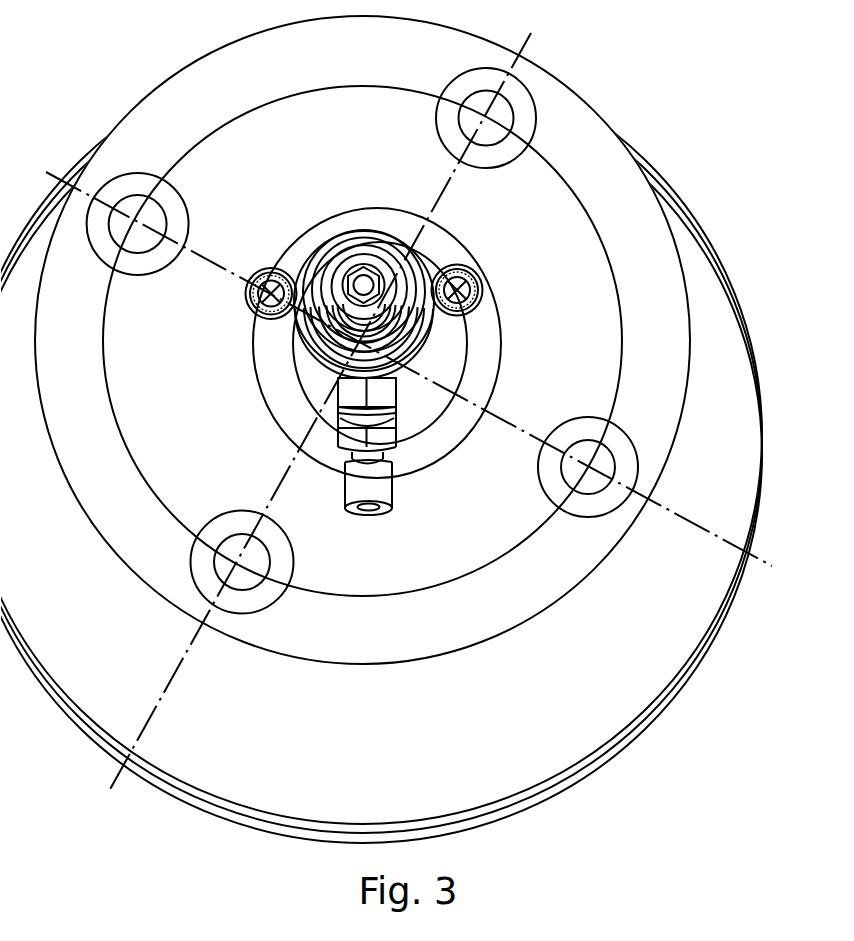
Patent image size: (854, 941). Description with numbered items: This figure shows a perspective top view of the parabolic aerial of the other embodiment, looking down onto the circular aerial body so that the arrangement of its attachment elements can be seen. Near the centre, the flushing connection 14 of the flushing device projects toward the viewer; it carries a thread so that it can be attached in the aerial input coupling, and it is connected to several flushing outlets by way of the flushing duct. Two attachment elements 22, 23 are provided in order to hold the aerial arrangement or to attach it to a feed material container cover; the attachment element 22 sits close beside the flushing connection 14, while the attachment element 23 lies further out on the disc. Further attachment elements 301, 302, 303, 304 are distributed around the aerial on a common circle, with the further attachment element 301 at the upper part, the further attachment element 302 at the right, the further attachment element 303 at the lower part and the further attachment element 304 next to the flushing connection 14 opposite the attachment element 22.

The flushing connection 14 is at (380, 483).
The attachment element 22 is at (260, 274).
The attachment element 23 is at (120, 175).
The further attachment element 301 is at (525, 90).
The further attachment element 302 is at (638, 444).
The further attachment element 303 is at (248, 614).
The further attachment element 304 is at (461, 266).